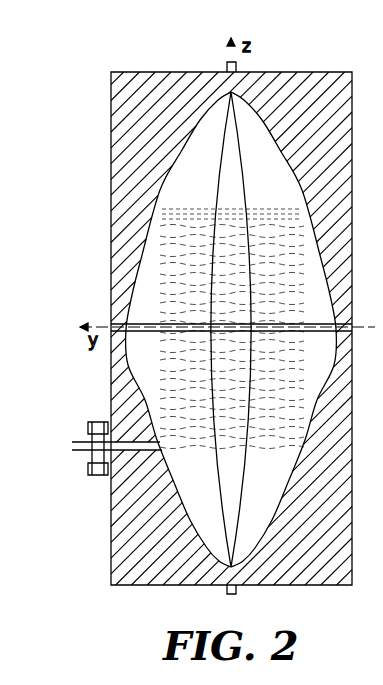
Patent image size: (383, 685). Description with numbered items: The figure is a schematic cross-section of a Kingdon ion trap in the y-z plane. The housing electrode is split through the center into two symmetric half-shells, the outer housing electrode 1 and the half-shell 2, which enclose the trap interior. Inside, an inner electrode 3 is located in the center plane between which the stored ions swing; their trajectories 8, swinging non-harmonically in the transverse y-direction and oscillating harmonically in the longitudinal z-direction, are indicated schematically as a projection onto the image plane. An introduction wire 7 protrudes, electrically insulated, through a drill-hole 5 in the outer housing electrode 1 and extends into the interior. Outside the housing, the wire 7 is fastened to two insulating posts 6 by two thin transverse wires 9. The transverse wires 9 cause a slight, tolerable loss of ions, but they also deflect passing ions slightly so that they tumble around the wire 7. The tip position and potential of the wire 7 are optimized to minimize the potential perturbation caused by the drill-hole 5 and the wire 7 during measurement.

The outer housing electrode 1 is at (222, 460).
The half-shell of the housing electrode 2 is at (221, 323).
The inner electrode 3 is at (234, 329).
The drill-hole 5 is at (136, 457).
The insulating posts 6 is at (98, 439).
The introduction wire 7 is at (72, 443).
The trajectories of stored ions 8 is at (232, 329).
The transverse wires 9 is at (99, 479).